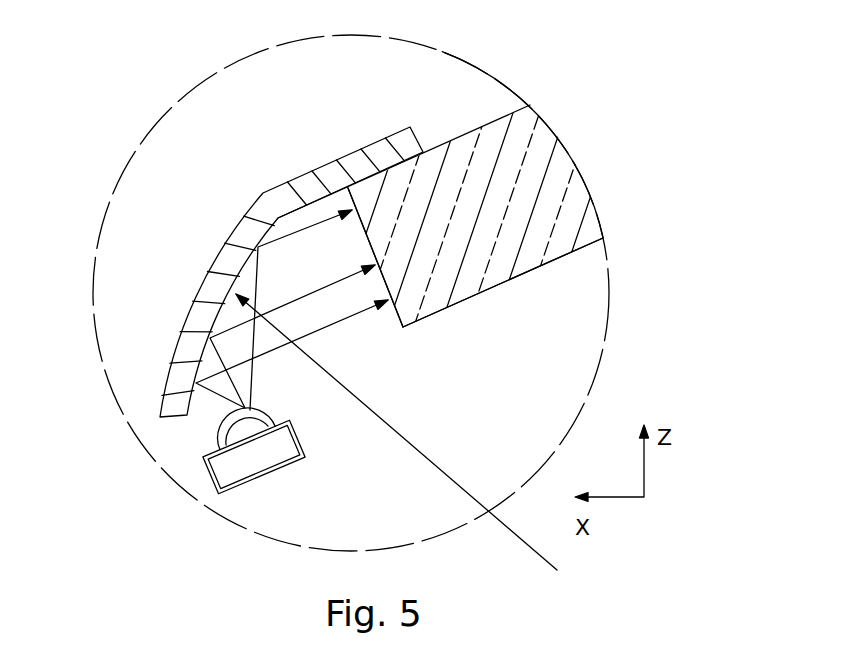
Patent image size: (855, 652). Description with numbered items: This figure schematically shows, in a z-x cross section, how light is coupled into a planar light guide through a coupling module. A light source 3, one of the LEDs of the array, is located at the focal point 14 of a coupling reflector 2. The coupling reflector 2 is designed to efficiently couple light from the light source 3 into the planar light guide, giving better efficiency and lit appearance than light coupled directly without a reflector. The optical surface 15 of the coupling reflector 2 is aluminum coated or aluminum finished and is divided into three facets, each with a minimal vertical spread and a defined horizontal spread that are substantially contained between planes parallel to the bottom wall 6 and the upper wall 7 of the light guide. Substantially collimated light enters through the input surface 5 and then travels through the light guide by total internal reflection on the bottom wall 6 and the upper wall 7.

The coupling reflector 2 is at (190, 308).
The light source 3 is at (252, 462).
The input surface 5 is at (384, 283).
The bottom wall 6 is at (563, 258).
The upper wall 7 is at (492, 118).
The focal point 14 is at (232, 433).
The optical surface 15 is at (557, 570).